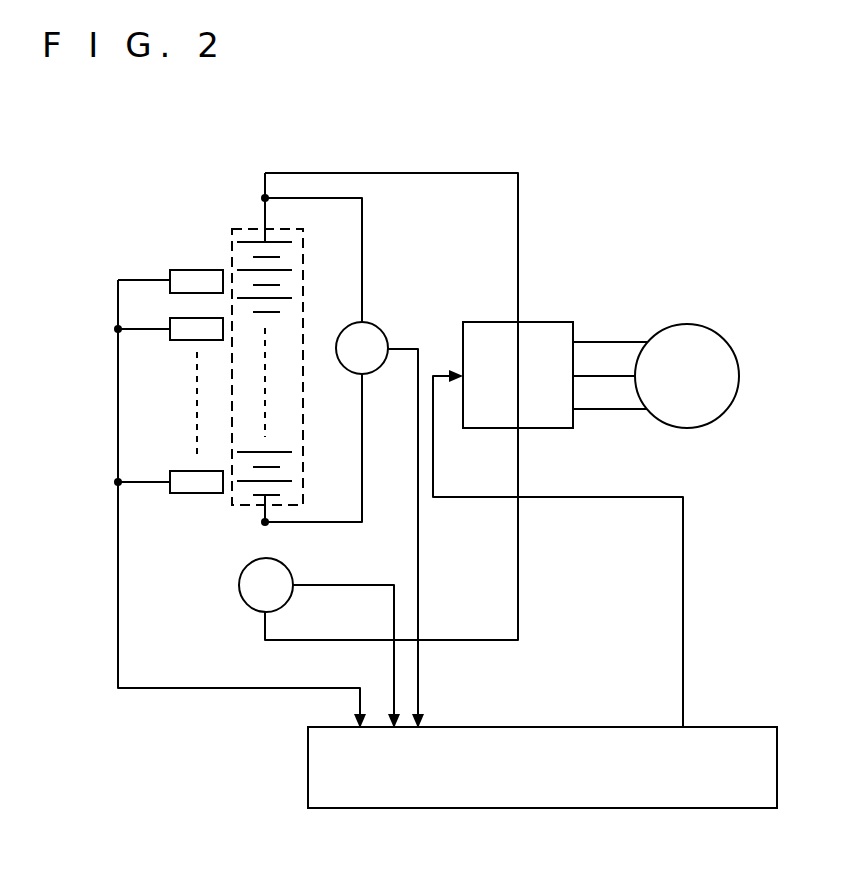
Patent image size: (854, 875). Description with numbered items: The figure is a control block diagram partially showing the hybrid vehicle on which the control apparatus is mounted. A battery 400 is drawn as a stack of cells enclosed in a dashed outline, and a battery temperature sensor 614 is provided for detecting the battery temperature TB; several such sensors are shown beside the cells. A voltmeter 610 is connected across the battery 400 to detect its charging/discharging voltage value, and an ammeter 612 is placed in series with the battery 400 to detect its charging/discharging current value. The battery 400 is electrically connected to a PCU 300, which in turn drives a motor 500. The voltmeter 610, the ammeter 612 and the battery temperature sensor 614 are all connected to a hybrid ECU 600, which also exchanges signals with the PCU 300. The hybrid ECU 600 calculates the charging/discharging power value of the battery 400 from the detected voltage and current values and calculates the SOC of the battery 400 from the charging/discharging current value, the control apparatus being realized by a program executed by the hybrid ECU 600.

The battery 400 is at (235, 220).
The battery temperature sensor 614 is at (188, 270).
The voltmeter 610 is at (377, 321).
The ammeter 612 is at (288, 565).
The PCU (Power Control Unit) 300 is at (553, 321).
The motor 500 is at (712, 327).
The hybrid ECU (Electronic Control Unit) 600 is at (745, 727).